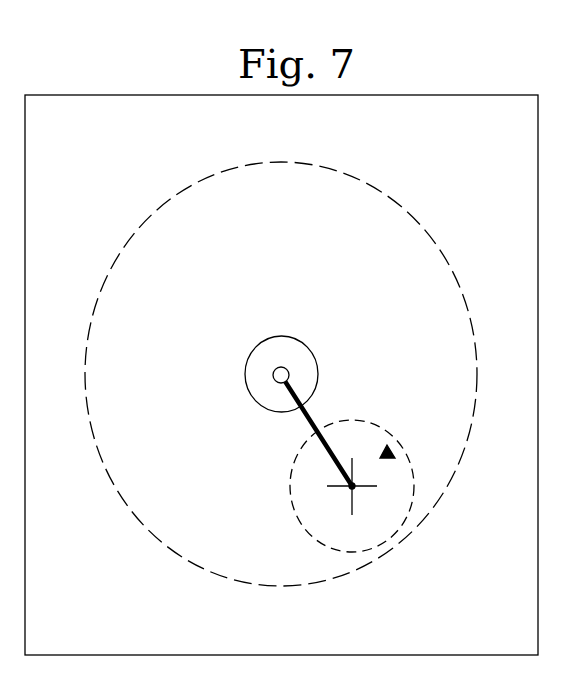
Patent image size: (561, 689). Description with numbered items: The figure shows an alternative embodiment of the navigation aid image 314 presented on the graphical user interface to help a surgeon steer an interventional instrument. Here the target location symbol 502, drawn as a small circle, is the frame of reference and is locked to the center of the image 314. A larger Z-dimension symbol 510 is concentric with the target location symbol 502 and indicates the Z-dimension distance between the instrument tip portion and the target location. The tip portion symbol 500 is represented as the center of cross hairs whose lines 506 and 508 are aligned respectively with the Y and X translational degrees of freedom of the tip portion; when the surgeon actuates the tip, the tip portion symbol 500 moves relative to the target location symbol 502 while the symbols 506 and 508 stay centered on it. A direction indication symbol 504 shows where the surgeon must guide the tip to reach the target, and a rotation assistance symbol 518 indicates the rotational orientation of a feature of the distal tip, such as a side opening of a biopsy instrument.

The navigation aid image 314 is at (405, 95).
The Z-dimension symbol 510 is at (283, 337).
The target location symbol 502 is at (273, 375).
The direction indication symbol 504 is at (303, 420).
The tip portion symbol 500 is at (350, 493).
The Y degree of freedom symbol 506 is at (354, 498).
The X degree of freedom symbol 508 is at (363, 481).
The rotation assistance symbol 518 is at (385, 447).